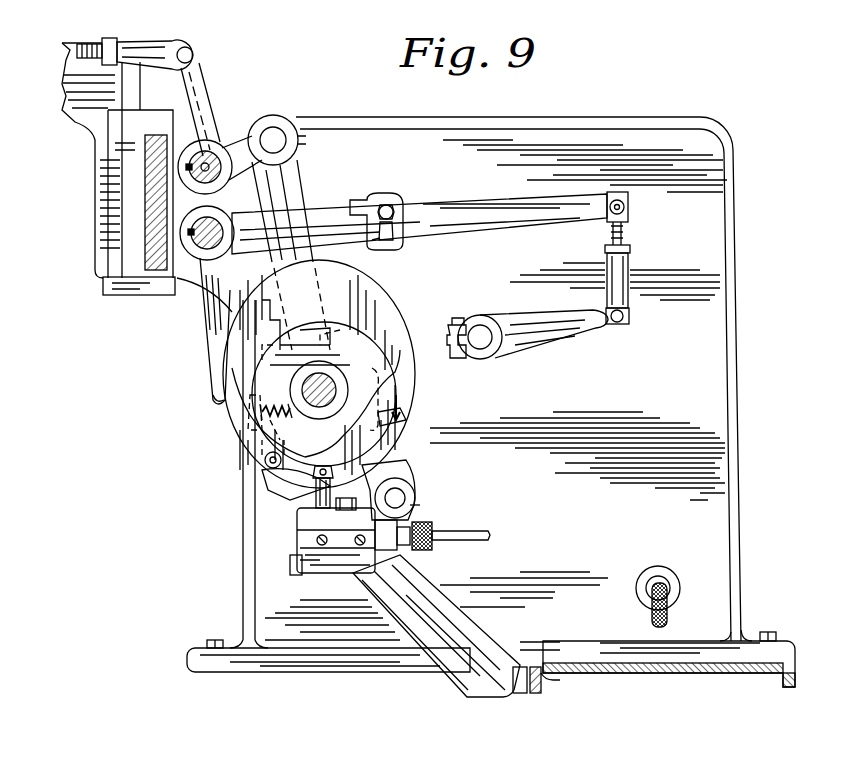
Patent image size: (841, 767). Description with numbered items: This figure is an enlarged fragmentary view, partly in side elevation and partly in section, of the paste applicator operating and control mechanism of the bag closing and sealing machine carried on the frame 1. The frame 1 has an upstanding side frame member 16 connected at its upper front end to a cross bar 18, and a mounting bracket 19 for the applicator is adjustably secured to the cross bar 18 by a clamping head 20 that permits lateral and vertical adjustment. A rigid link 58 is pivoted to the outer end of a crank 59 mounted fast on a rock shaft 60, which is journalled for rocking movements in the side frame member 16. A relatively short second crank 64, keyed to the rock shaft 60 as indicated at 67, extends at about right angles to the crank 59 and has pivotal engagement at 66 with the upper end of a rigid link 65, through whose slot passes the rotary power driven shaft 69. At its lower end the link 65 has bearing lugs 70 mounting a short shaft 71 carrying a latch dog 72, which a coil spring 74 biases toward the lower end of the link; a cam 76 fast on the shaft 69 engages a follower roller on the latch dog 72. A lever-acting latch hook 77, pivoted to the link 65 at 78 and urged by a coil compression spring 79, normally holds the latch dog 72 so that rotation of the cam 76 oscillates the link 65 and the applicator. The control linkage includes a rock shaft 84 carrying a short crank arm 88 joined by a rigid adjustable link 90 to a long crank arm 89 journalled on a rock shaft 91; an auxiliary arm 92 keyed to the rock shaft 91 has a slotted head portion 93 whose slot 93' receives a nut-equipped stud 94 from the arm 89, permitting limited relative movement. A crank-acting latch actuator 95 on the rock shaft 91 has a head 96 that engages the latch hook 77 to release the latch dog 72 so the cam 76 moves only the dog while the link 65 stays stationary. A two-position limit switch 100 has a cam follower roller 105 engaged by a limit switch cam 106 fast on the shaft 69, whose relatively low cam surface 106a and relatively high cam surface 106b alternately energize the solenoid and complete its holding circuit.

The frame 1 is at (642, 673).
The side frame member 16 is at (590, 528).
The cross bar 18 is at (152, 224).
The mounting bracket 19 is at (78, 120).
The clamping head 20 is at (135, 178).
The rigid link 58 is at (93, 46).
The crank 59 is at (201, 97).
The rock shaft 60 is at (220, 175).
The second crank 64 is at (243, 150).
The rigid link 65 is at (287, 192).
The pivotal engagement 66 is at (276, 137).
The key 67 is at (200, 150).
The power driven shaft 69 is at (336, 370).
The bearing lugs 70 is at (400, 468).
The short shaft 71 is at (413, 490).
The latch dog 72 is at (406, 500).
The coil spring 74 is at (335, 527).
The cam 76 is at (418, 415).
The latch hook 77 is at (285, 492).
The pivot 78 is at (270, 462).
The coil compression spring 79 is at (260, 420).
The rock shaft 84 is at (484, 352).
The short crank arm 88 is at (540, 340).
The long crank arm 89 is at (480, 223).
The adjustable link 90 is at (617, 268).
The rock shaft 91 is at (205, 250).
The auxiliary arm 92 is at (347, 208).
The slotted head portion 93 is at (412, 194).
The slot 93' is at (415, 245).
The nut-equipped stud 94 is at (378, 243).
The latch actuator 95 is at (217, 352).
The head 96 is at (217, 400).
The limit switch 100 is at (317, 555).
The cam follower roller 105 is at (293, 500).
The limit switch cam 106 is at (392, 338).
The low cam surface 106a is at (420, 424).
The high cam surface 106b is at (262, 410).